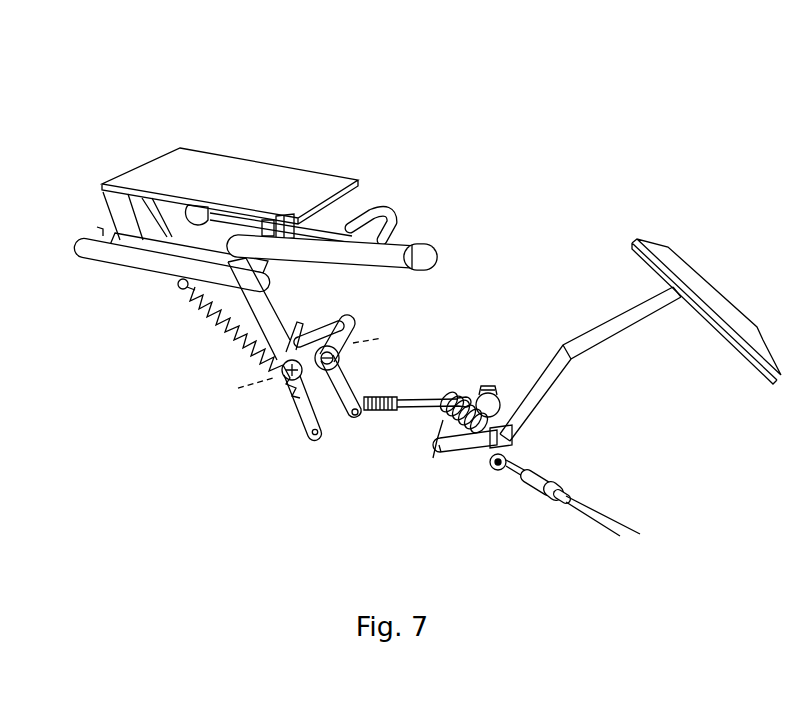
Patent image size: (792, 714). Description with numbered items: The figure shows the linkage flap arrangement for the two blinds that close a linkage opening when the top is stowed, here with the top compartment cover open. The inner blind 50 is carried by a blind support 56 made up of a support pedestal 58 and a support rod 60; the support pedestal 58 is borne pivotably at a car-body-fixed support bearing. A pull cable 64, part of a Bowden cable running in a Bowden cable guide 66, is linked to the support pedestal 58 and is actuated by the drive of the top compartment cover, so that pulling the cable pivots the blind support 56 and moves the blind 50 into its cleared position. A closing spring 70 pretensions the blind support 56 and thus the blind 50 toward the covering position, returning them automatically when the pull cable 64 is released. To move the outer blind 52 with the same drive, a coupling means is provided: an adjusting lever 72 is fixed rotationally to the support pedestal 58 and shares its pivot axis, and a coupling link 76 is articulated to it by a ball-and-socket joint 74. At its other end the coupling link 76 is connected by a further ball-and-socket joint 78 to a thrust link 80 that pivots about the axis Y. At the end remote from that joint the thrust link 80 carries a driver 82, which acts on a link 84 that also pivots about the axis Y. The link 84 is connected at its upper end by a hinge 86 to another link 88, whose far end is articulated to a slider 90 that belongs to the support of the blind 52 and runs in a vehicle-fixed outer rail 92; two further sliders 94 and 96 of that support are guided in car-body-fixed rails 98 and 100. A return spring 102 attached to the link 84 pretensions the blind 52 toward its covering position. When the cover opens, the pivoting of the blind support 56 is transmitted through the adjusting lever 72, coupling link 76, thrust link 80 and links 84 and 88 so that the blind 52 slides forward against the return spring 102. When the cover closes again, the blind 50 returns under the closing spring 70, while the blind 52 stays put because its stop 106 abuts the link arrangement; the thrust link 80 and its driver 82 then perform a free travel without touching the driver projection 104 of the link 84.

The blind 50 is at (672, 262).
The blind 52 is at (196, 175).
The blind support 56 is at (590, 356).
The support pedestal 58 is at (462, 453).
The support rod 60 is at (615, 332).
The pull cable 64 is at (525, 467).
The Bowden cable guide 66 is at (603, 523).
The closing spring 70 is at (420, 450).
The adjusting lever 72 is at (447, 448).
The ball-and-socket joint 74 is at (487, 402).
The coupling link 76 is at (431, 372).
The ball-and-socket joint 78 is at (368, 413).
The thrust link 80 is at (363, 373).
The driver 82 is at (378, 413).
The link 84 is at (286, 375).
The hinge 86 is at (239, 352).
The link 88 is at (168, 244).
The slider 90 is at (134, 302).
The outer rail 92 is at (127, 257).
The slider 94 is at (248, 217).
The slider 96 is at (185, 203).
The rail 98 is at (427, 251).
The rail 100 is at (347, 228).
The return spring 102 is at (242, 394).
The driver projection 104 is at (298, 322).
The stop 106 is at (295, 202).
The axis Y is at (367, 335).